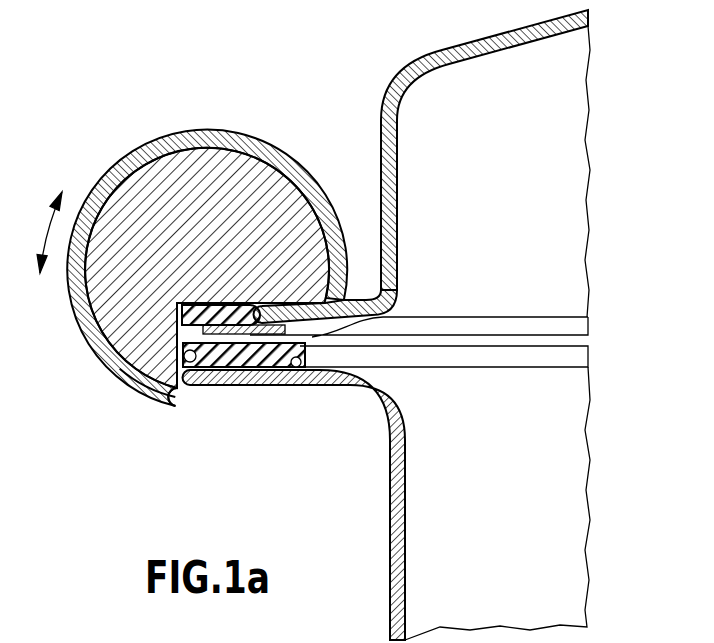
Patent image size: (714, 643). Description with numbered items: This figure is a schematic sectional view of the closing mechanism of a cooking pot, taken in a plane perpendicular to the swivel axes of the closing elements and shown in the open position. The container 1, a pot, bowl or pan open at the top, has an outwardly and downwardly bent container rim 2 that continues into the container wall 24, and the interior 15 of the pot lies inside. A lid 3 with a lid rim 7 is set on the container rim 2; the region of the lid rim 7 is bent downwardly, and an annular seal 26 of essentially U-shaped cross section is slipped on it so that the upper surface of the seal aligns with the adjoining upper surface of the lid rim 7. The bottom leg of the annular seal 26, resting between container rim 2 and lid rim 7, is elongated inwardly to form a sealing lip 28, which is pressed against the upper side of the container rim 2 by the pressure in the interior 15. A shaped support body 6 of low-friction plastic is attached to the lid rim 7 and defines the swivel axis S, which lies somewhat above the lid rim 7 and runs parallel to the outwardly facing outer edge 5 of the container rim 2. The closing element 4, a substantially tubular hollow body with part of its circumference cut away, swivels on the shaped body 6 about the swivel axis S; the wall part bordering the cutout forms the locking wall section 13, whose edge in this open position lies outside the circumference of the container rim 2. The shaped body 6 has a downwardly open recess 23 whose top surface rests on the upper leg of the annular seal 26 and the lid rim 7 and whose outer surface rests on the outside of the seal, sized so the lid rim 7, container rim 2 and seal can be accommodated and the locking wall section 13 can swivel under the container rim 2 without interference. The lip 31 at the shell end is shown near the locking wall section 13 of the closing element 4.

The container 1 is at (375, 448).
The container rim 2 is at (313, 382).
The lid 3 is at (487, 57).
The closing element 4 is at (262, 143).
The outer edge of the container rim 5 is at (189, 388).
The shaped support body 6 is at (128, 190).
The lid rim 7 is at (355, 298).
The locking wall section 13 is at (144, 408).
The interior 15 is at (512, 475).
The recess 23 is at (210, 368).
The container wall 24 is at (400, 546).
The annular seal 26 is at (396, 317).
The sealing lip 28 is at (294, 370).
The lip 31 is at (97, 362).
The swivel axis S is at (206, 275).